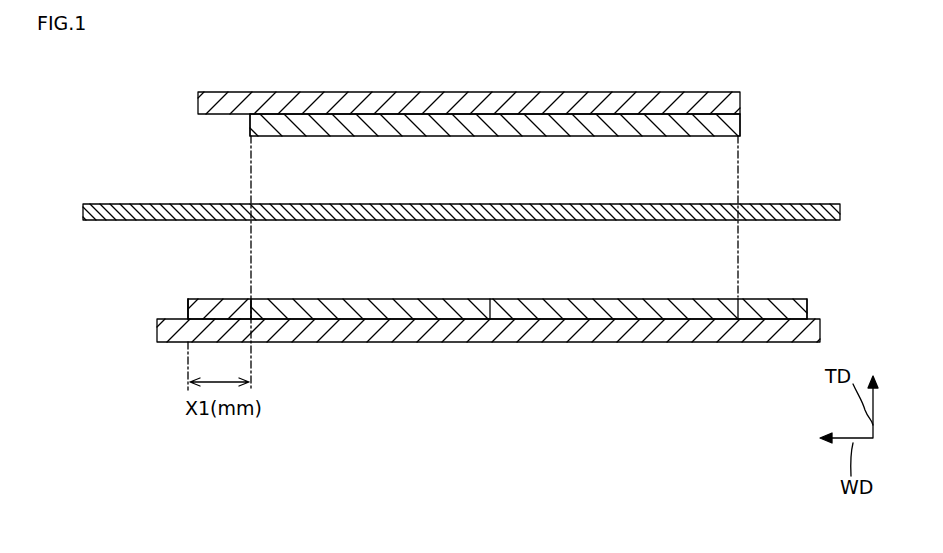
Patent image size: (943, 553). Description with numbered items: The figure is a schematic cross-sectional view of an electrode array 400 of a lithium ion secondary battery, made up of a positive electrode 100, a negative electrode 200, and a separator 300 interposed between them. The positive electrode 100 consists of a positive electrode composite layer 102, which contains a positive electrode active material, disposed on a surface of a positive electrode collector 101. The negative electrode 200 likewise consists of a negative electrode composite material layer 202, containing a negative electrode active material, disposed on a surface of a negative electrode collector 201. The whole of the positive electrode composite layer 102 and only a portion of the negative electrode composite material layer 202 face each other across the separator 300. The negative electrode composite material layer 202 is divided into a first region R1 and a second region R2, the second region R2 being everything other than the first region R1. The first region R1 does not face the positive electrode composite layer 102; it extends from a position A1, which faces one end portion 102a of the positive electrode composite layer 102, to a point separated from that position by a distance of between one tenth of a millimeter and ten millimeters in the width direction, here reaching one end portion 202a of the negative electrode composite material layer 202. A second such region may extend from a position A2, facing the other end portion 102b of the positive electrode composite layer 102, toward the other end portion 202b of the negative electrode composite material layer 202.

The positive electrode 100 is at (117, 90).
The positive electrode collector 101 is at (198, 104).
The positive electrode composite layer 102 is at (455, 137).
The one end portion of positive electrode composite layer 102a is at (250, 127).
The other end portion of positive electrode composite layer 102b is at (741, 118).
The negative electrode 200 is at (89, 293).
The negative electrode collector 201 is at (157, 332).
The negative electrode composite material layer 202 is at (802, 262).
The one end portion of negative electrode composite material layer 202a is at (188, 307).
The other end portion of negative electrode composite material layer 202b is at (807, 308).
The separator 300 is at (605, 204).
The electrode array 400 is at (853, 78).
The first region R1 is at (213, 309).
The second region R2 is at (491, 305).
The position A1 is at (266, 298).
The position A2 is at (725, 298).